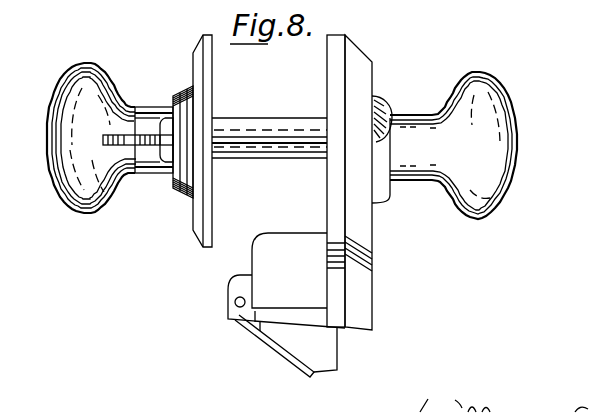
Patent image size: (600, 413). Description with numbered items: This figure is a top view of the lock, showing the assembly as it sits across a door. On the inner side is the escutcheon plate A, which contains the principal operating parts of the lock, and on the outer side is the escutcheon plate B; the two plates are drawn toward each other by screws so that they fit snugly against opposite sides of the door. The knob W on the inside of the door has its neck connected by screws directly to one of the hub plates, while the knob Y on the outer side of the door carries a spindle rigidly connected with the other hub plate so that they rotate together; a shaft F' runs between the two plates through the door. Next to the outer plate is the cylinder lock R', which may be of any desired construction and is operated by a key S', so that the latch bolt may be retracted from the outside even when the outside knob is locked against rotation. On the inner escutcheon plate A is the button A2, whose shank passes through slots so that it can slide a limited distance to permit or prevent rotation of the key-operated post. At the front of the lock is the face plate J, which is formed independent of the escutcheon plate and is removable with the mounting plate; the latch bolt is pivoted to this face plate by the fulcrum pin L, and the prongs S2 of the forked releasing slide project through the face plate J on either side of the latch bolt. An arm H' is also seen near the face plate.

The escutcheon plate B is at (202, 62).
The shaft sleeve F' is at (269, 124).
The escutcheon plate A is at (360, 68).
The button A2 is at (382, 110).
The knob W is at (463, 203).
The key S' is at (94, 163).
The knob Y is at (106, 206).
The cylinder lock R' is at (175, 163).
The fulcrum pin L is at (234, 302).
The face plate J is at (255, 318).
The arm H' is at (274, 347).
The prongs S2 is at (325, 357).